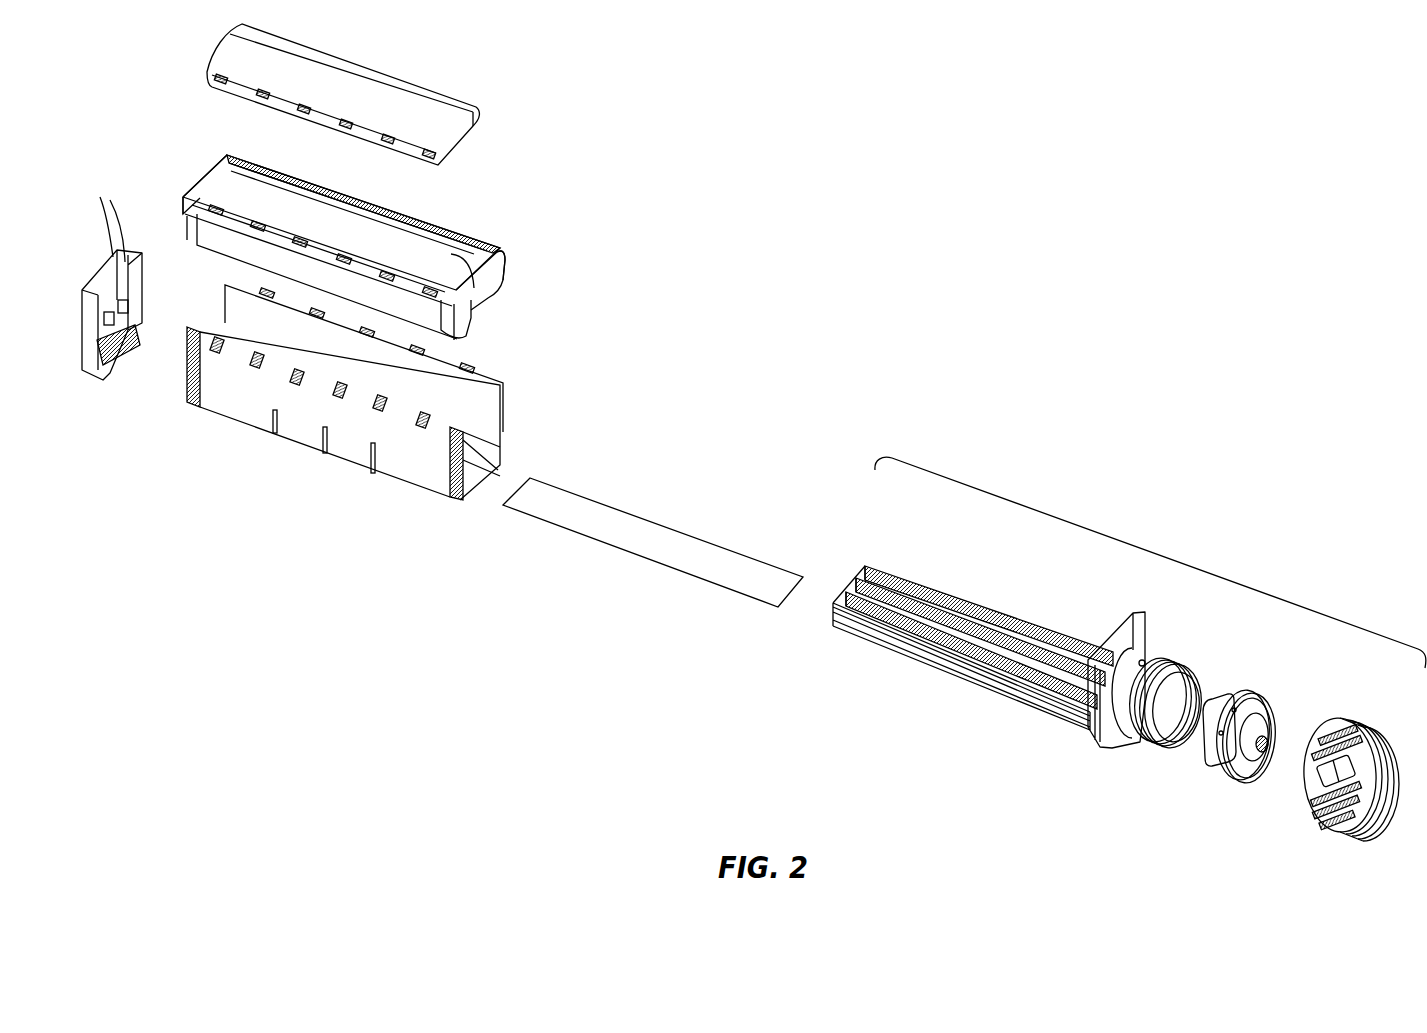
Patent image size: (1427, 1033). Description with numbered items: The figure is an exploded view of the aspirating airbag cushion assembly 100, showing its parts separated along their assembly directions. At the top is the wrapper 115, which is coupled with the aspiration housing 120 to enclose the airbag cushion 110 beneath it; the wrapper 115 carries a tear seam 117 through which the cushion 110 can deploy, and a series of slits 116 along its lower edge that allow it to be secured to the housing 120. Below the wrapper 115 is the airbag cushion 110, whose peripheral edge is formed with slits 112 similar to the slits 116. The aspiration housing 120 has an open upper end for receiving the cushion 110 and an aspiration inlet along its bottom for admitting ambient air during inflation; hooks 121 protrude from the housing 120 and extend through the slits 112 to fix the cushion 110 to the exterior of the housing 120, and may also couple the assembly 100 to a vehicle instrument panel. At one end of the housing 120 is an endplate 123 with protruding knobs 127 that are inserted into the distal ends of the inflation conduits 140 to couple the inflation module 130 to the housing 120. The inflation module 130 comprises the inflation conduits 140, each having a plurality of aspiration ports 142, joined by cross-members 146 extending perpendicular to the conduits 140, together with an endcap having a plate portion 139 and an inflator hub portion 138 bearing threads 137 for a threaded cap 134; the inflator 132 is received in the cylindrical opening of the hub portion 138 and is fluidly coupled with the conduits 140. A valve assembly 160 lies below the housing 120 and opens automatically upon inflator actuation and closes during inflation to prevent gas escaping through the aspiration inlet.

The aspirating airbag cushion assembly 100 is at (1351, 69).
The airbag cushion 110 is at (515, 267).
The slits 112 is at (185, 201).
The wrapper 115 is at (449, 71).
The slits 116 is at (207, 82).
The tear seam 117 is at (340, 74).
The aspiration housing 120 is at (305, 417).
The hooks 121 is at (208, 413).
The endplate 123 is at (103, 378).
The protruding knobs 127 is at (112, 203).
The inflation module 130 is at (1190, 567).
The inflator 132 is at (1273, 695).
The threaded cap 134 is at (1363, 717).
The threads 137 is at (1193, 670).
The inflator hub portion 138 is at (1163, 660).
The plate portion 139 is at (1160, 625).
The inflation conduits 140 is at (876, 578).
The aspiration ports 142 is at (997, 605).
The cross-members 146 is at (897, 573).
The valve assembly 160 is at (629, 558).